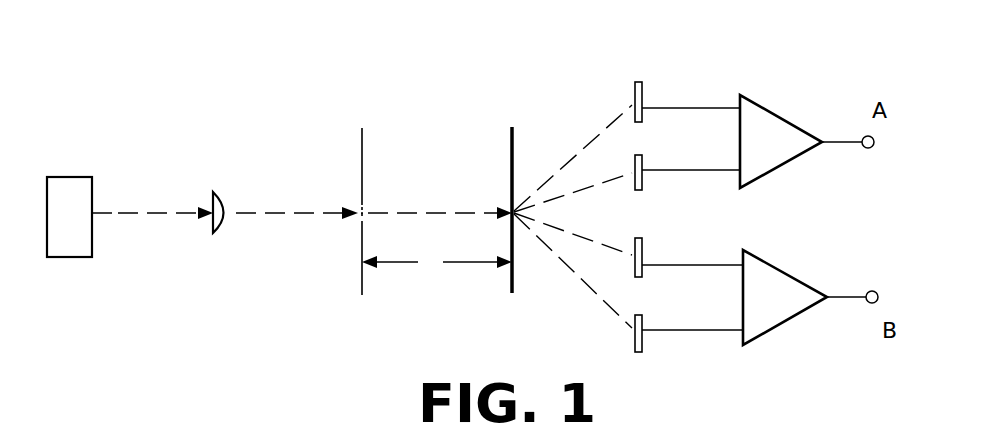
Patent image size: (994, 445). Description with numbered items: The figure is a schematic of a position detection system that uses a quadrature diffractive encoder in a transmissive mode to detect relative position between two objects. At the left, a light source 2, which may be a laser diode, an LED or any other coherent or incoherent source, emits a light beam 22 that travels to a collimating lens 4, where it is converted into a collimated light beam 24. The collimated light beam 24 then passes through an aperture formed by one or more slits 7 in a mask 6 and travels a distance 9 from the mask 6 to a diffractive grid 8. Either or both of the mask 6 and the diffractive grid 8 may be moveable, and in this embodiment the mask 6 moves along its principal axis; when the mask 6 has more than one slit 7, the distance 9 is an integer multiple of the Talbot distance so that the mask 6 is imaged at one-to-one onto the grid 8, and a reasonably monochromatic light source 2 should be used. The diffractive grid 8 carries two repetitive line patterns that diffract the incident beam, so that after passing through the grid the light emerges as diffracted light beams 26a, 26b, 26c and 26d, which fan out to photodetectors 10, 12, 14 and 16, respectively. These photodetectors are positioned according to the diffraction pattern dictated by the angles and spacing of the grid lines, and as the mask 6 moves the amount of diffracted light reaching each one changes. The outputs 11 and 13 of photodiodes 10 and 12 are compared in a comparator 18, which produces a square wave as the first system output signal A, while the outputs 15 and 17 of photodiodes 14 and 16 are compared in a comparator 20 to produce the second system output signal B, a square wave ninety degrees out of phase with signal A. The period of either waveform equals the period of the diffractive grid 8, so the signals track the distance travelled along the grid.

The light source 2 is at (71, 177).
The collimating lens 4 is at (216, 193).
The mask 6 is at (362, 152).
The slit 7 is at (374, 203).
The diffractive grid 8 is at (512, 141).
The distance 9 is at (437, 261).
The photodetector 10 is at (637, 82).
The output 11 is at (671, 108).
The photodetector 12 is at (638, 191).
The output 13 is at (675, 170).
The photodetector 14 is at (638, 238).
The output 15 is at (690, 265).
The photodetector 16 is at (640, 352).
The output 17 is at (688, 330).
The comparator 18 is at (775, 112).
The comparator 20 is at (777, 265).
The light beam 22 is at (159, 210).
The collimated light beam 24 is at (287, 210).
The diffracted light beam 26a is at (570, 155).
The diffracted light beam 26b is at (603, 177).
The diffracted light beam 26c is at (598, 245).
The diffracted light beam 26d is at (590, 292).